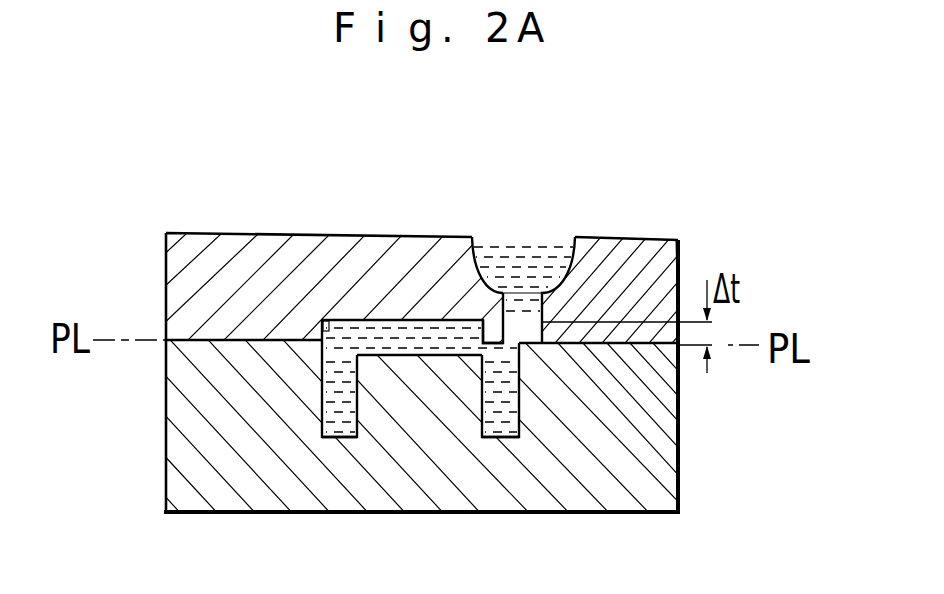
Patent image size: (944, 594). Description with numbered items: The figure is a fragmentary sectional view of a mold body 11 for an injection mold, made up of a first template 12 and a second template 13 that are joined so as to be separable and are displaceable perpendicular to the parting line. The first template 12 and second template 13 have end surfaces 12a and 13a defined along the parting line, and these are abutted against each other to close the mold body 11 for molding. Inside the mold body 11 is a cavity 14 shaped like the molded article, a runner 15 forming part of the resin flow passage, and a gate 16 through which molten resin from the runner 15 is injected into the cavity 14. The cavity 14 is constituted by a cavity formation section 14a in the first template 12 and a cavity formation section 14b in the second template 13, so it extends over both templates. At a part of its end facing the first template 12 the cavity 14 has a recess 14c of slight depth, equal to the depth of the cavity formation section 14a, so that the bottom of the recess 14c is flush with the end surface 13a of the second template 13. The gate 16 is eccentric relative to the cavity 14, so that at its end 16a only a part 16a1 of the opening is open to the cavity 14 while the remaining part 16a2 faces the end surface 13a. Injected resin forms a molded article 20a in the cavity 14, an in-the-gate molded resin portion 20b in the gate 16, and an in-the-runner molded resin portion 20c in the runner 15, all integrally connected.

The mold body 11 is at (678, 238).
The first template 12 is at (642, 302).
The end surface of first template 12a is at (630, 350).
The second template 13 is at (650, 465).
The end surface of second template 13a is at (587, 350).
The cavity 14 is at (93, 217).
The cavity formation section 14a is at (323, 320).
The cavity formation section 14b is at (322, 392).
The recess 14c is at (492, 318).
The runner 15 is at (530, 277).
The gate 16 is at (503, 290).
The end of gate 16a is at (683, 245).
The part of opening 16a1 is at (500, 437).
The remaining part of opening 16a2 is at (508, 343).
The molded article 20a is at (380, 338).
The in-the-gate molded resin portion 20b is at (624, 237).
The in-the-runner molded resin portion 20c is at (523, 265).